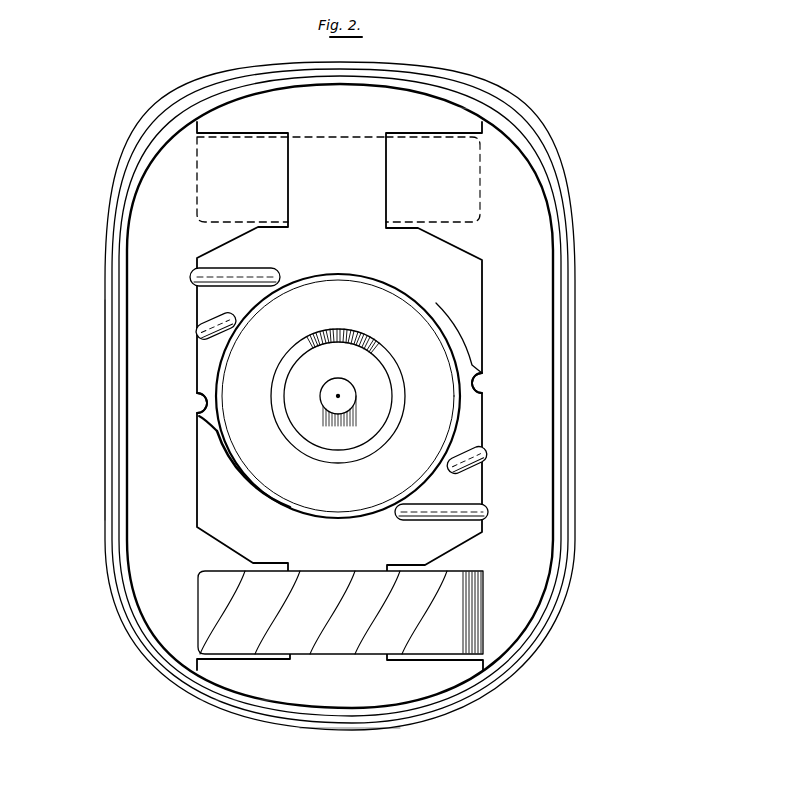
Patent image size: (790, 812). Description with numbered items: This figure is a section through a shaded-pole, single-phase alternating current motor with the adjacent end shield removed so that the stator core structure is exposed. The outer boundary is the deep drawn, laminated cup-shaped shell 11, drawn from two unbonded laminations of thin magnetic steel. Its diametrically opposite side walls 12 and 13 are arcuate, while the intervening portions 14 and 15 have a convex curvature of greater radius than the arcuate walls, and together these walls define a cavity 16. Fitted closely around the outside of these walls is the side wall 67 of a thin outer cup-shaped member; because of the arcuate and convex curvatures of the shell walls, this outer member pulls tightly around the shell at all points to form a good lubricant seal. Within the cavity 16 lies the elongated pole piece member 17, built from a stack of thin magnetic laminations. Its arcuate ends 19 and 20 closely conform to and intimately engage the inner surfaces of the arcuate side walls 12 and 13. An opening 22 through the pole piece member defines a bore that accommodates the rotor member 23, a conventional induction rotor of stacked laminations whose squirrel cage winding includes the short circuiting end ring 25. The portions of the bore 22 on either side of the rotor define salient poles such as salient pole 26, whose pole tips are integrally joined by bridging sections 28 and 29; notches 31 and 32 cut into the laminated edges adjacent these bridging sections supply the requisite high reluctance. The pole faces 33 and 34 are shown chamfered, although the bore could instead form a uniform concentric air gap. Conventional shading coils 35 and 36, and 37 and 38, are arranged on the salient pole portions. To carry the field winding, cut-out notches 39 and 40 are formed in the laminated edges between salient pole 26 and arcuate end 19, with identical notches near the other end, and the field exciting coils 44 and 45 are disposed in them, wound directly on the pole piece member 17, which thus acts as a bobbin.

The shell 11 is at (575, 298).
The side wall 12 is at (412, 82).
The side wall 13 is at (365, 724).
The intervening portion 14 is at (106, 416).
The intervening portion 15 is at (572, 390).
The cavity 16 is at (525, 231).
The pole piece member 17 is at (192, 493).
The arcuate end 19 is at (393, 108).
The arcuate end 20 is at (328, 687).
The opening 22 is at (410, 296).
The rotor member 23 is at (222, 431).
The short circuiting end ring 25 is at (262, 452).
The salient pole 26 is at (338, 358).
The bridging section 28 is at (197, 357).
The bridging section 29 is at (483, 303).
The notch 31 is at (205, 405).
The notch 32 is at (476, 384).
The pole face 33 is at (458, 336).
The pole face 34 is at (220, 446).
The shading coil 35 is at (190, 278).
The shading coil 36 is at (197, 330).
The shading coil 37 is at (487, 458).
The shading coil 38 is at (489, 514).
The notch 39 is at (288, 192).
The notch 40 is at (386, 182).
The field exciting coil 44 is at (484, 200).
The field exciting coil 45 is at (474, 583).
The side wall 67 is at (385, 68).